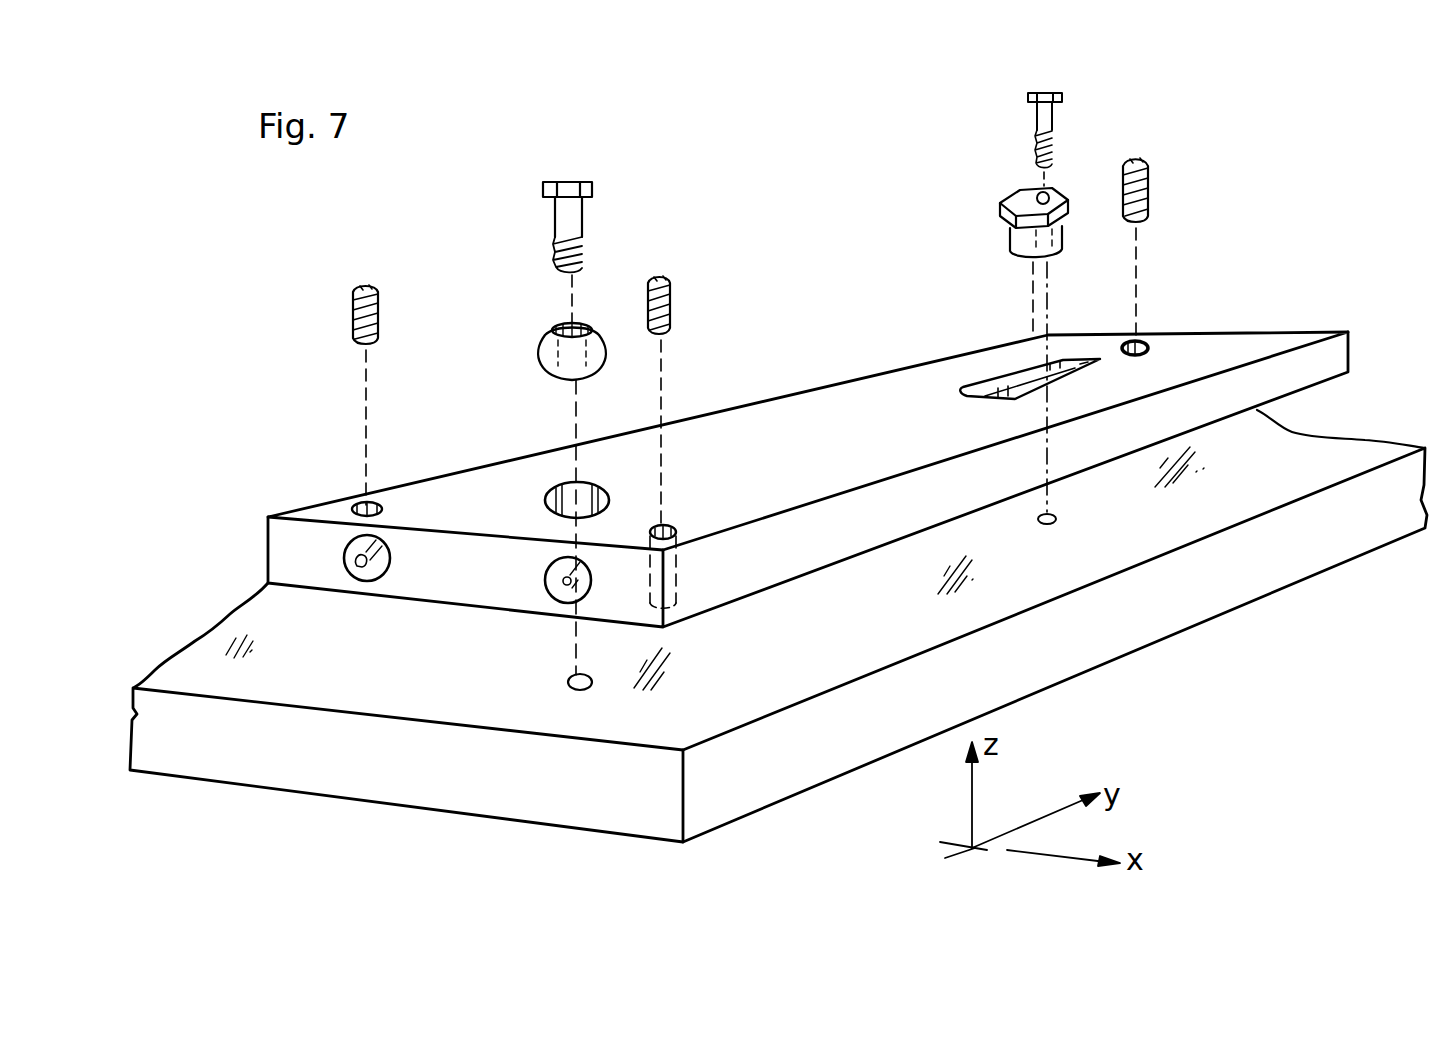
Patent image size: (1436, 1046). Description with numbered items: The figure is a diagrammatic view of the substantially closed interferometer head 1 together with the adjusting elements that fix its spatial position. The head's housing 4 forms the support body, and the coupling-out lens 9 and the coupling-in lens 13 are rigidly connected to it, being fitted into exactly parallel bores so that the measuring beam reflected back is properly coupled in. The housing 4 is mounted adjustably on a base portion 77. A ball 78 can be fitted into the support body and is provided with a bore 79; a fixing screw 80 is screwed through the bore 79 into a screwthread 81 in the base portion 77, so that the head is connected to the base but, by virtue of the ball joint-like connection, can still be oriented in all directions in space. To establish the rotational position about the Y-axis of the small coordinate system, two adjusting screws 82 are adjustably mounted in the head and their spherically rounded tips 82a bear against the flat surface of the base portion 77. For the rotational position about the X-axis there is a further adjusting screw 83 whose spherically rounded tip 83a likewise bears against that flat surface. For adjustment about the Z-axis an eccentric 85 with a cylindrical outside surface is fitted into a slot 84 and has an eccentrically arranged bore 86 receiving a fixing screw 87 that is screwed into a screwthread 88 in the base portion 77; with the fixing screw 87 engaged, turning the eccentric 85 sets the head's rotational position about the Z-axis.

The interferometer head 1 is at (695, 452).
The housing 4 is at (780, 558).
The coupling-out lens 9 is at (557, 598).
The coupling-in lens 13 is at (360, 570).
The base portion 77 is at (527, 785).
The ball 78 is at (540, 358).
The bore 79 is at (563, 327).
The bolt 80 is at (567, 227).
The screwthread 81 is at (585, 690).
The adjusting screws 82 is at (353, 300).
The tips 82a is at (360, 340).
The adjusting screw 83 is at (1150, 178).
The tip 83a is at (1150, 220).
The slot 84 is at (990, 380).
The eccentric 85 is at (1003, 210).
The eccentrically arranged bore 86 is at (1050, 196).
The fixing screw 87 is at (1033, 140).
The screwthread 88 is at (1053, 525).